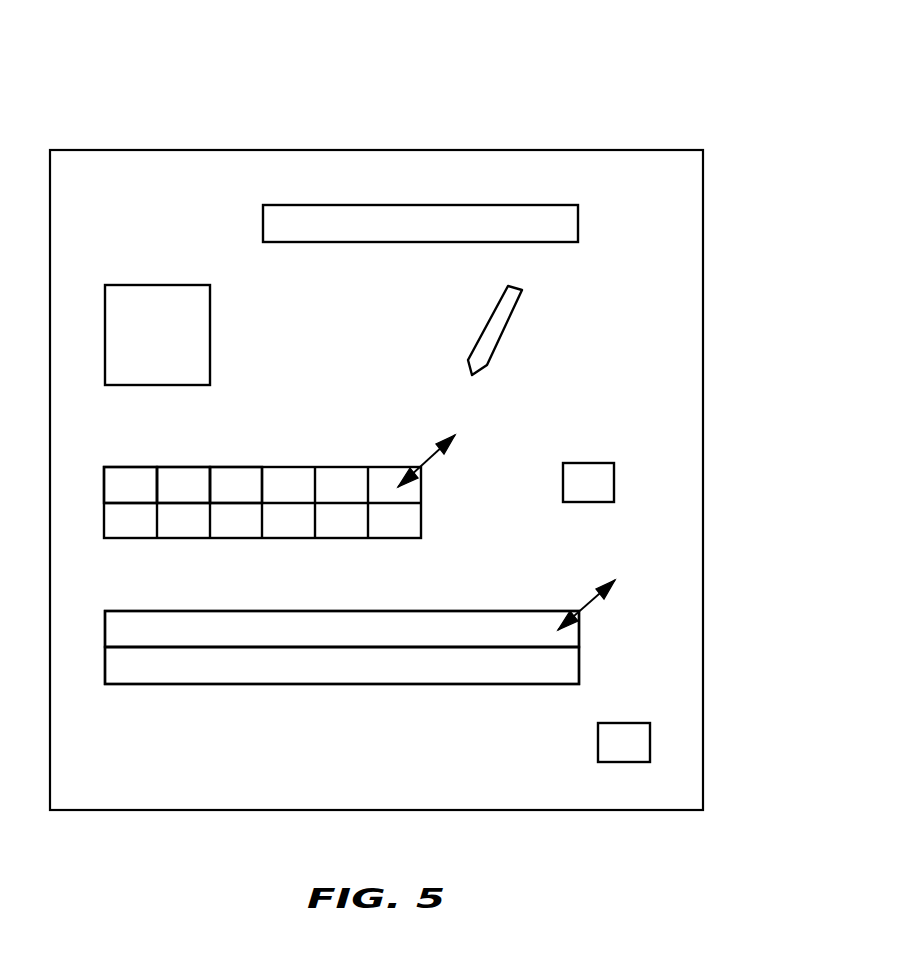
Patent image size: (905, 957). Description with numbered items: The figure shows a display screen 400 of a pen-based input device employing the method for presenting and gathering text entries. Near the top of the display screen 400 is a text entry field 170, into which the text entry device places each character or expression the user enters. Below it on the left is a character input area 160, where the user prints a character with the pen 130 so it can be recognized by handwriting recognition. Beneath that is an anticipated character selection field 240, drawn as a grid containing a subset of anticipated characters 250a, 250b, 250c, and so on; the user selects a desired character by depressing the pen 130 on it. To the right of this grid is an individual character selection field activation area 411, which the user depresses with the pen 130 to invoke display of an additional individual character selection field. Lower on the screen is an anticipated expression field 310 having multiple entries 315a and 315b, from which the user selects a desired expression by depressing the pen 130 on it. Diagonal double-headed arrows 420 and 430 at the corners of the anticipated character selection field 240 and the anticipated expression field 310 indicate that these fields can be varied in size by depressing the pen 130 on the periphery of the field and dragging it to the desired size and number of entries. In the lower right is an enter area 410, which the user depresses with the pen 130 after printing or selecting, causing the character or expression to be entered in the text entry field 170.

The display screen 400 is at (225, 162).
The text entry field 170 is at (568, 237).
The character input area 160 is at (195, 308).
The pen 130 is at (495, 330).
The anticipated character selection field 240 is at (410, 503).
The anticipated character 250a is at (113, 477).
The anticipated character 250b is at (185, 477).
The anticipated character 250c is at (227, 477).
The resize arrow 420 is at (447, 443).
The individual character selection field activation area 411 is at (583, 493).
The anticipated expression field 310 is at (342, 610).
The entry 315a is at (140, 633).
The entry 315b is at (242, 663).
The resize arrow 430 is at (605, 592).
The enter area 410 is at (618, 750).